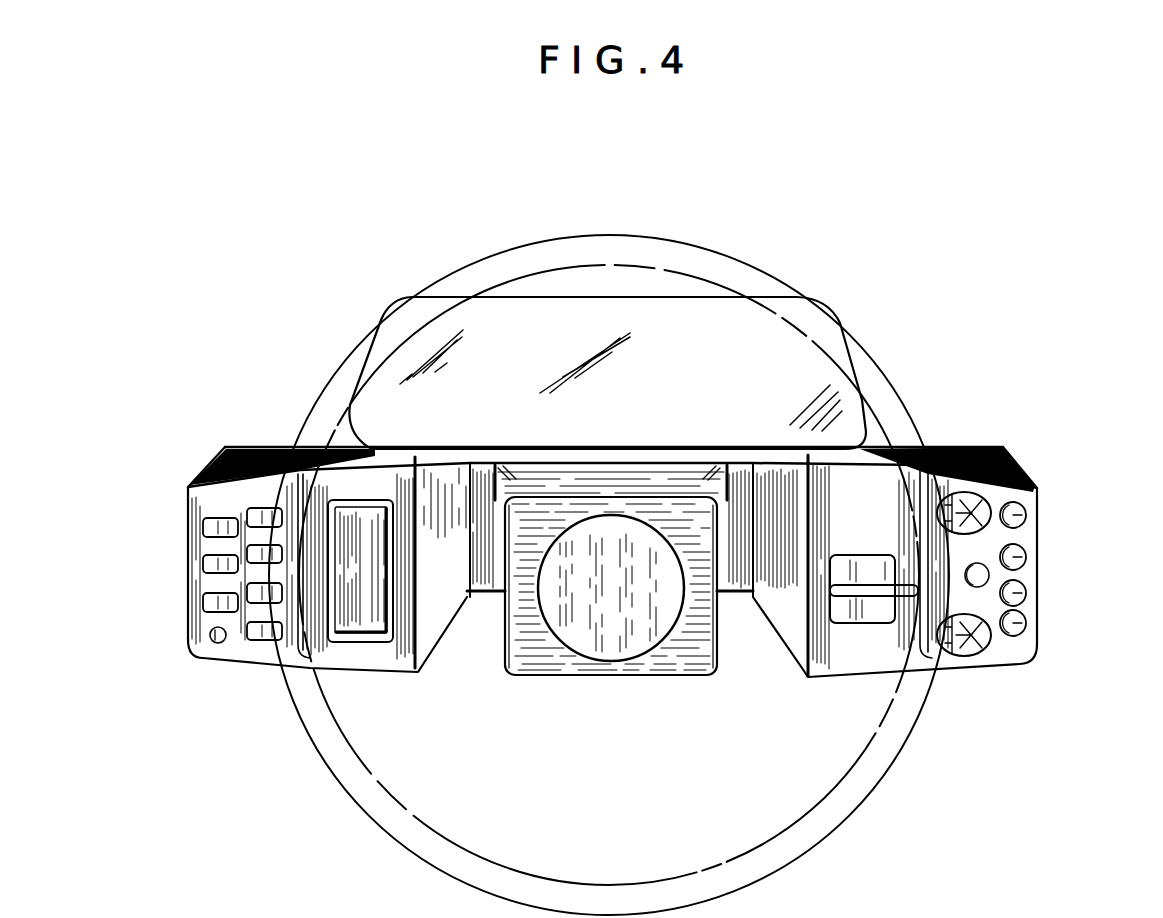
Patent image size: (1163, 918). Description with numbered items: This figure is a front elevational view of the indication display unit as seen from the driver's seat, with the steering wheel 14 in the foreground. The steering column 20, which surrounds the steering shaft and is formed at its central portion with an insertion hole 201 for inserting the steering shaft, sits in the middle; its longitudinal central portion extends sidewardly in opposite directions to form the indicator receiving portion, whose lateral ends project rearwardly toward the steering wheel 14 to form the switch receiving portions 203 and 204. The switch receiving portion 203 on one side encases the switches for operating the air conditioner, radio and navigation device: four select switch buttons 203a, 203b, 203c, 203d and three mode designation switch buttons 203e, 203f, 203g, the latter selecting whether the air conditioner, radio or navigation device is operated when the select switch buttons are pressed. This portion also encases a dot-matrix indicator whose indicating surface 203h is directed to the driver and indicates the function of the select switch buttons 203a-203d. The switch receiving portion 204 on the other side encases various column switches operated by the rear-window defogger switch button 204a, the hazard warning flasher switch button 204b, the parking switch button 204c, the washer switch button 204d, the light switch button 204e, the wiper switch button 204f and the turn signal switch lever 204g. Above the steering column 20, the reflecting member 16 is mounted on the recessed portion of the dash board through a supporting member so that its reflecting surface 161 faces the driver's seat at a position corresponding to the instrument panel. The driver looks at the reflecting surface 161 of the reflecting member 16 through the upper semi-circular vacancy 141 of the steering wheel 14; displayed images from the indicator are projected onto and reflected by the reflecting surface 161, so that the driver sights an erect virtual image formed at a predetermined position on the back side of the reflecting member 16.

The steering wheel 14 is at (873, 363).
The upper semi-circular vacancy 141 is at (583, 280).
The reflecting member 16 is at (653, 297).
The reflecting surface 161 is at (742, 343).
The steering column 20 is at (733, 596).
The insertion hole 201 is at (578, 640).
The switch receiving portion 203 is at (245, 452).
The select switch button 203a is at (250, 512).
The select switch button 203b is at (250, 548).
The select switch button 203c is at (258, 603).
The select switch button 203d is at (260, 638).
The mode designation switch button 203e is at (207, 528).
The mode designation switch button 203f is at (207, 567).
The mode designation switch button 203g is at (207, 603).
The indicating surface 203h is at (357, 622).
The switch receiving portion 204 is at (980, 453).
The rear-window defogger switch button 204a is at (1026, 513).
The hazard warning flasher switch button 204b is at (1026, 559).
The parking switch button 204c is at (1026, 593).
The washer switch button 204d is at (1026, 626).
The light switch button 204e is at (968, 500).
The wiper switch button 204f is at (966, 648).
The turn signal switch lever 204g is at (866, 618).